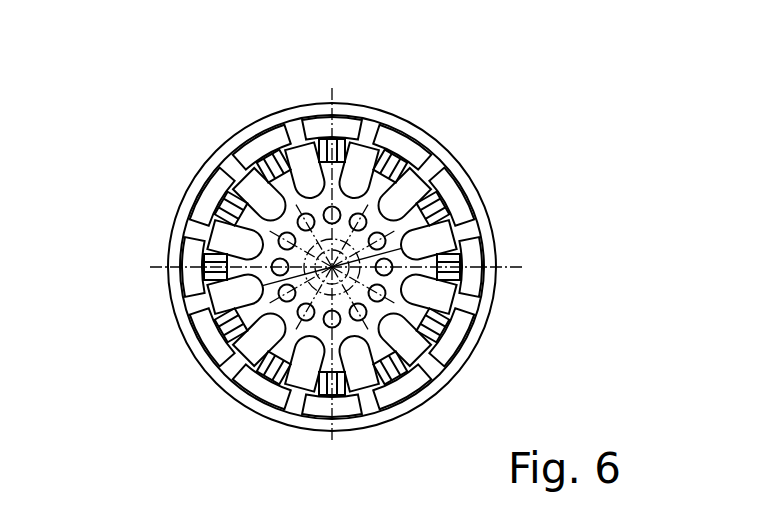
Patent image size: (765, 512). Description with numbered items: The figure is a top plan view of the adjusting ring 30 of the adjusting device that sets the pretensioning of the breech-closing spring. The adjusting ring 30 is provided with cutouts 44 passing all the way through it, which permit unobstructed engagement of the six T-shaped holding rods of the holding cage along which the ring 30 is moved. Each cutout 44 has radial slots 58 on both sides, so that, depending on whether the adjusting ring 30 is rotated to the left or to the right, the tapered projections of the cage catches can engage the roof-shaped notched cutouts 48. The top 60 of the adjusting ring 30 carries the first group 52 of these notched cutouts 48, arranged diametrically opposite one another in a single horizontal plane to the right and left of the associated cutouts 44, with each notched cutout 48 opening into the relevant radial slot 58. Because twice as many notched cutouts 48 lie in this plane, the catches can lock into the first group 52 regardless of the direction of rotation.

The adjusting ring 30 is at (420, 230).
The cutouts 44 is at (313, 197).
The notched cutouts 48 is at (398, 158).
The first group 52 is at (338, 132).
The radial slots 58 is at (250, 153).
The top 60 is at (222, 165).